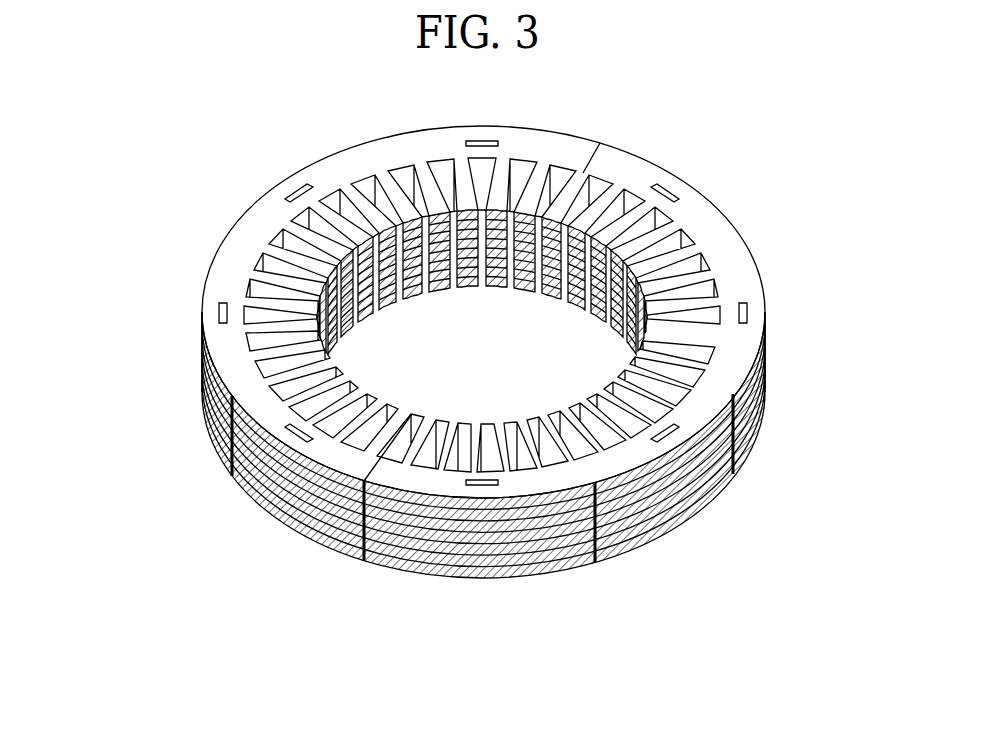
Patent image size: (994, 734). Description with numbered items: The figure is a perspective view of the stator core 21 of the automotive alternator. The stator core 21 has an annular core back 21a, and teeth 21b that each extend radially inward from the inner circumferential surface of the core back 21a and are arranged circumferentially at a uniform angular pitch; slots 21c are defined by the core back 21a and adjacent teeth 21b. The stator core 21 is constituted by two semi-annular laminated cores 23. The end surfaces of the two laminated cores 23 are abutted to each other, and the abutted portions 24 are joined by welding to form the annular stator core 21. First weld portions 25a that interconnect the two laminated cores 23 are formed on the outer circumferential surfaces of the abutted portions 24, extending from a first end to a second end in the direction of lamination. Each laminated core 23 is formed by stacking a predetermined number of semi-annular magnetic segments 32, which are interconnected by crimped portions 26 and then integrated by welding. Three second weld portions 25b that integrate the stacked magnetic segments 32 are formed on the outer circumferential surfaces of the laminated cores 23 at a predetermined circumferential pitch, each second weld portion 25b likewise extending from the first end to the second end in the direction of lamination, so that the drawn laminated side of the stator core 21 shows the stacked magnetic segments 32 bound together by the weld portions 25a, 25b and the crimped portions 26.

The stator core 21 is at (131, 123).
The core back 21a is at (713, 233).
The teeth 21b is at (678, 253).
The slots 21c is at (678, 230).
The laminated cores 23 is at (206, 264).
The abutted portions 24 is at (580, 163).
The first weld portions 25a is at (600, 143).
The second weld portions 25b is at (228, 466).
The crimped portions 26 is at (290, 190).
The magnetic segments 32 is at (463, 573).